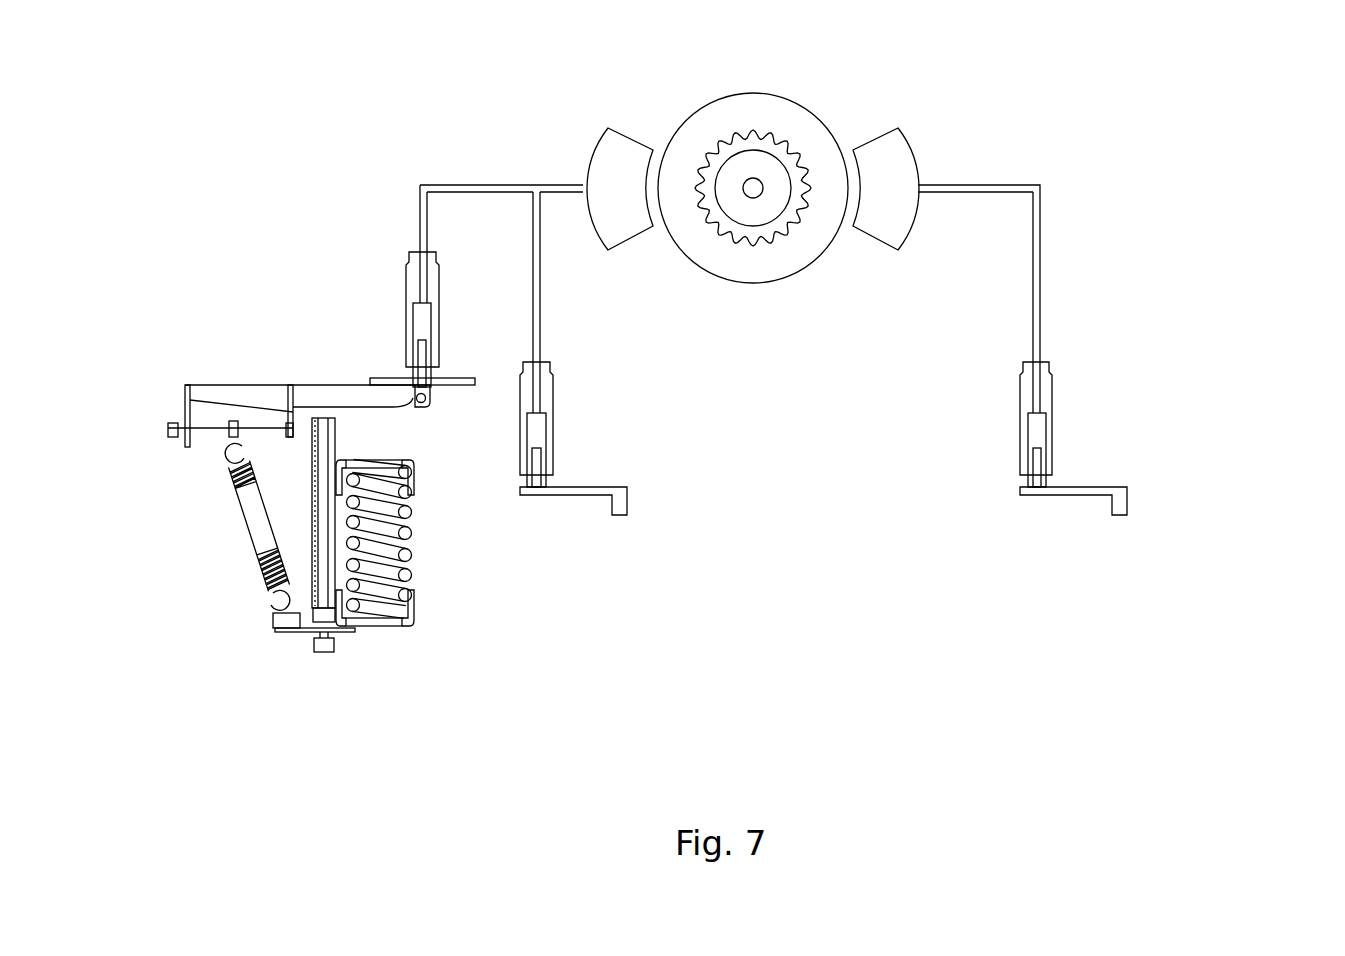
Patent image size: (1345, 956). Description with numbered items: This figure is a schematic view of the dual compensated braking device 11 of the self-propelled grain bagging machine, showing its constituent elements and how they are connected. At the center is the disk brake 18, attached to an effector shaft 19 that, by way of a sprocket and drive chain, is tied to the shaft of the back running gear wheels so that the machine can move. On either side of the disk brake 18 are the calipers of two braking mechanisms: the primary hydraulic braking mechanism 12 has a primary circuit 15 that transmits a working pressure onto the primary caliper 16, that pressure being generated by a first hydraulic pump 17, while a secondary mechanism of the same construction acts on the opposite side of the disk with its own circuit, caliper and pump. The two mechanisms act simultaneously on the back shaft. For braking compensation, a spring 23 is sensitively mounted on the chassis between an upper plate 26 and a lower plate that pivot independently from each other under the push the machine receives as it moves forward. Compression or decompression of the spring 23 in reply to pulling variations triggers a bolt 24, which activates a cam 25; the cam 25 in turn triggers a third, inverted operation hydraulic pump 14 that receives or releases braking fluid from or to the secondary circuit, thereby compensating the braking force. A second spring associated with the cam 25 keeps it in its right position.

The dual compensated braking device 11 is at (1198, 310).
The primary hydraulic braking mechanism 12 is at (1047, 210).
The inverted operation hydraulic pump 14 is at (407, 295).
The primary circuit 15 is at (1042, 250).
The primary caliper 16 is at (893, 162).
The first hydraulic pump 17 is at (1054, 400).
The disk brake 18 is at (760, 265).
The effector shaft 19 is at (755, 186).
The spring 23 is at (412, 536).
The bolt 24 is at (325, 475).
The cam 25 is at (378, 400).
The upper plate 26 is at (413, 472).